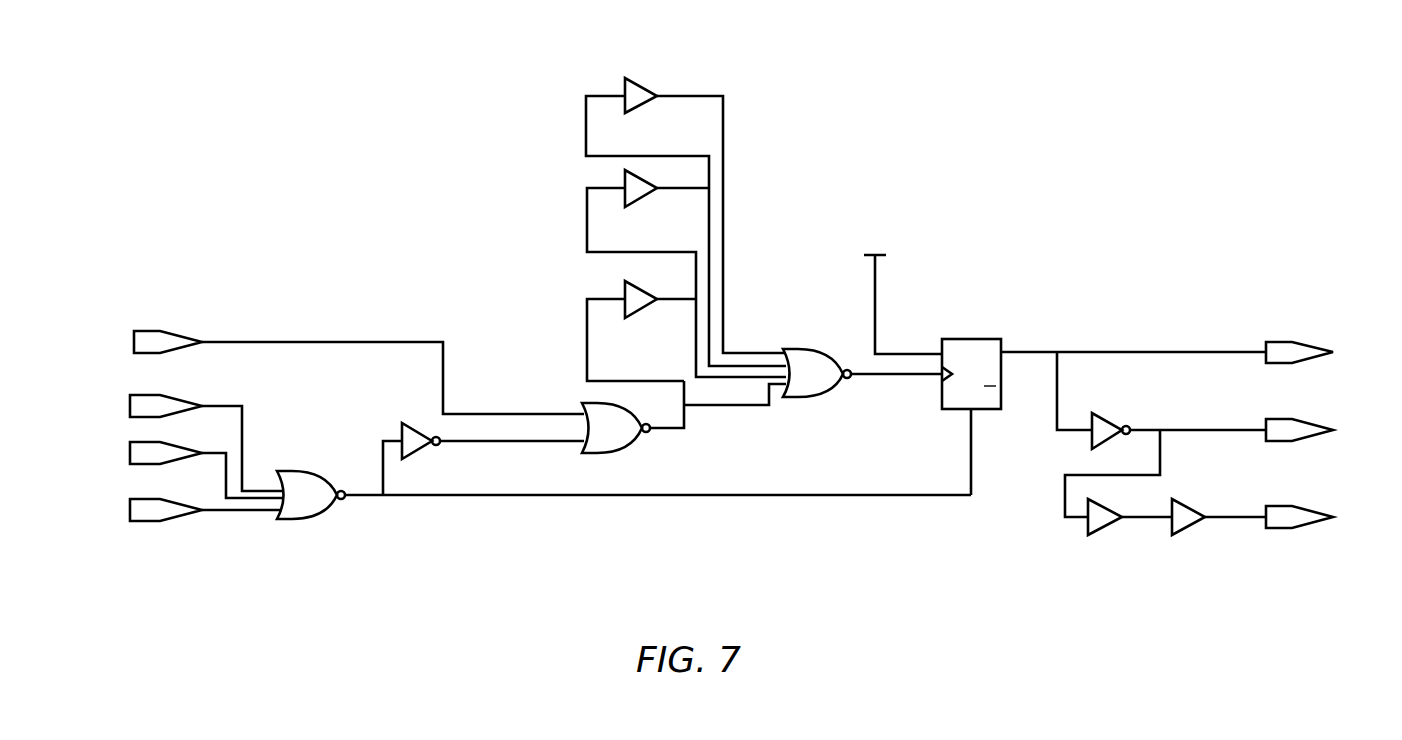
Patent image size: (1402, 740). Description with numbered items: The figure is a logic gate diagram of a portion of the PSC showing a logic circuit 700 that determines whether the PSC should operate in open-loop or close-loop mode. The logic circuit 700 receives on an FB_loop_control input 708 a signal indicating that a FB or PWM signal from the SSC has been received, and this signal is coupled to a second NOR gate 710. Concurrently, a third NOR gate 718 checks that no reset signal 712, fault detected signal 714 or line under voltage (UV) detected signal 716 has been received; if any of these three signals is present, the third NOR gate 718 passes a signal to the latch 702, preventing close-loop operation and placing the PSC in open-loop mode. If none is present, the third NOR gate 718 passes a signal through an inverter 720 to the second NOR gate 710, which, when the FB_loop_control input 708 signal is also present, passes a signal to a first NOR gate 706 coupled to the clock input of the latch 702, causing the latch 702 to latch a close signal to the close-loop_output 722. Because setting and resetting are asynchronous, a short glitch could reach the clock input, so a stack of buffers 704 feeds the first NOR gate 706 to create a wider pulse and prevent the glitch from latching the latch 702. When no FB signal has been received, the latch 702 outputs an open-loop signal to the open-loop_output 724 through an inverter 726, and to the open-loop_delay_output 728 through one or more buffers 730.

The logic circuit 700 is at (230, 54).
The latch 702 is at (972, 339).
The stack of buffers 704 is at (633, 58).
The first NOR gate 706 is at (804, 349).
The FB_loop_control input 708 is at (152, 331).
The second NOR gate 710 is at (597, 453).
The reset signal 712 is at (130, 405).
The fault detected signal 714 is at (130, 452).
The line under voltage (UV) detected signal 716 is at (130, 508).
The third NOR gate 718 is at (300, 471).
The inverter 720 is at (412, 426).
The close-loop_output 722 is at (1285, 342).
The open-loop_output 724 is at (1283, 419).
The inverter 726 is at (1106, 417).
The open-loop_delay_output 728 is at (1285, 506).
The buffers 730 is at (1215, 533).